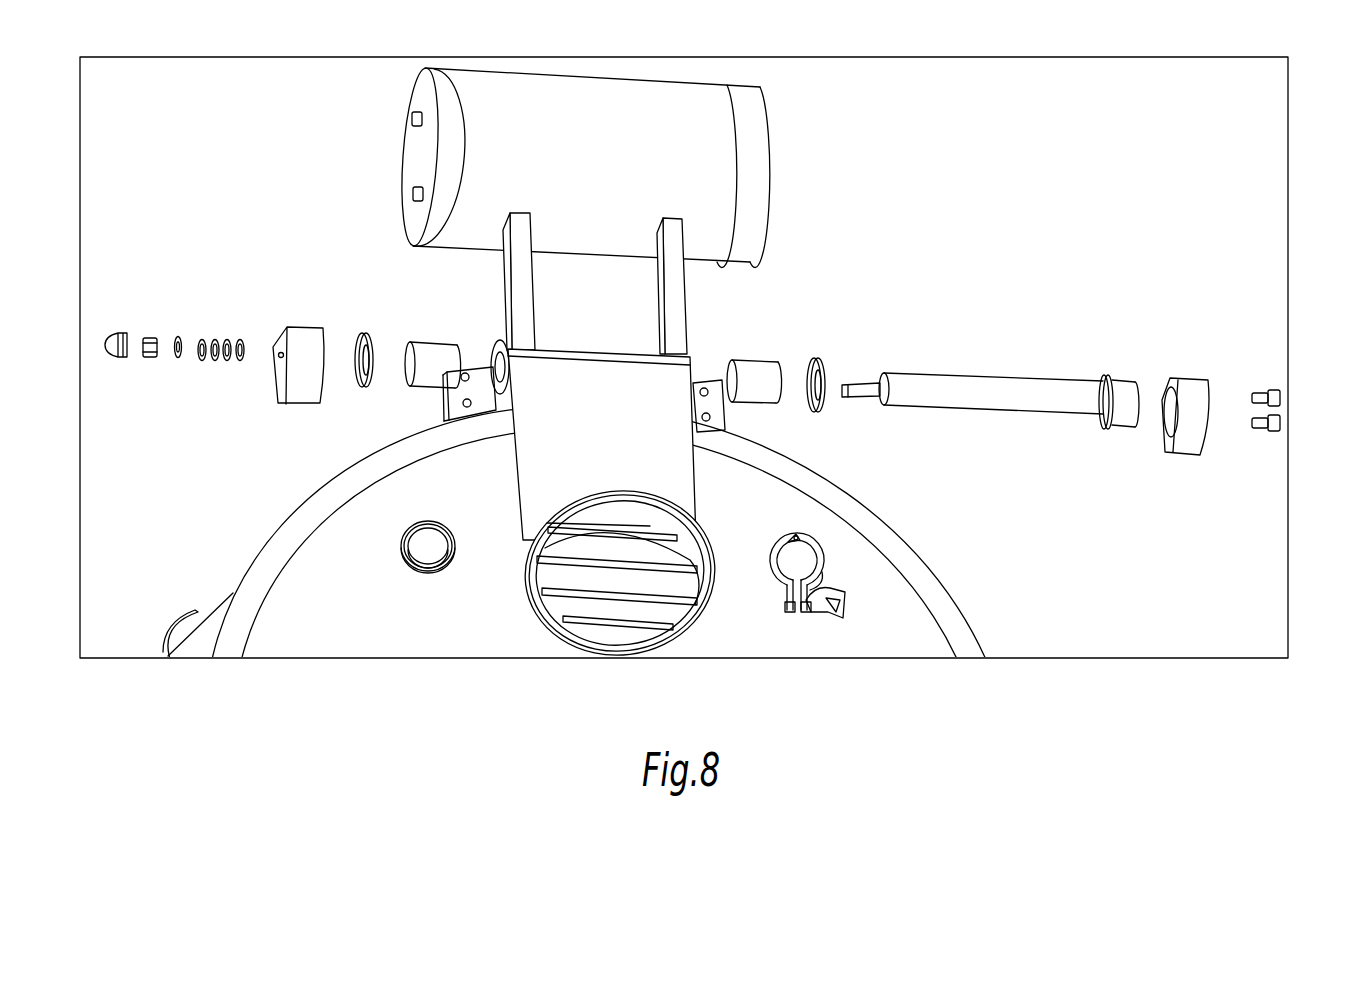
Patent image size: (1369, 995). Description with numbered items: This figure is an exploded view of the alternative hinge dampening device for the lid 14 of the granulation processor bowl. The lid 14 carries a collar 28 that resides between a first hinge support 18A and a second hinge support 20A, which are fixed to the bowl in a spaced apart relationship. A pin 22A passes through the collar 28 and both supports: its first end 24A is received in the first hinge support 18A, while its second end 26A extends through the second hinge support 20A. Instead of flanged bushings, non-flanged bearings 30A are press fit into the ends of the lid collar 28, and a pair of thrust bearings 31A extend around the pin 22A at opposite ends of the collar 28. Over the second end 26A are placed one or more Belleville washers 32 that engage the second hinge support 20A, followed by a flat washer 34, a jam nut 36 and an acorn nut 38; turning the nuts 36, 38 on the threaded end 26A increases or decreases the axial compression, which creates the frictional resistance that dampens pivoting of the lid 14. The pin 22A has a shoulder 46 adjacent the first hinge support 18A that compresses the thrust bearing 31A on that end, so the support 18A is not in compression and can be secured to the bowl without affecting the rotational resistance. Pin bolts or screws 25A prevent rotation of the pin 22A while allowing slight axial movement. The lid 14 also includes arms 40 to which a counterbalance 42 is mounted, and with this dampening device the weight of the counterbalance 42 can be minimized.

The lid 14 is at (852, 563).
The first hinge support 18A is at (1193, 385).
The second hinge support 20A is at (303, 395).
The pin 22A is at (985, 375).
The first end 24A is at (1115, 428).
The pin bolts or screws 25A is at (1283, 421).
The second end 26A is at (862, 382).
The collar 28 is at (580, 347).
The non-flanged bearing 30A is at (435, 342).
The thrust bearing 31A is at (370, 335).
The Belleville washers 32 is at (240, 361).
The flat washer 34 is at (180, 338).
The jam nut 36 is at (148, 358).
The acorn nut 38 is at (105, 344).
The arms 40 is at (522, 280).
The counterbalance 42 is at (720, 125).
The shoulder 46 is at (1107, 375).